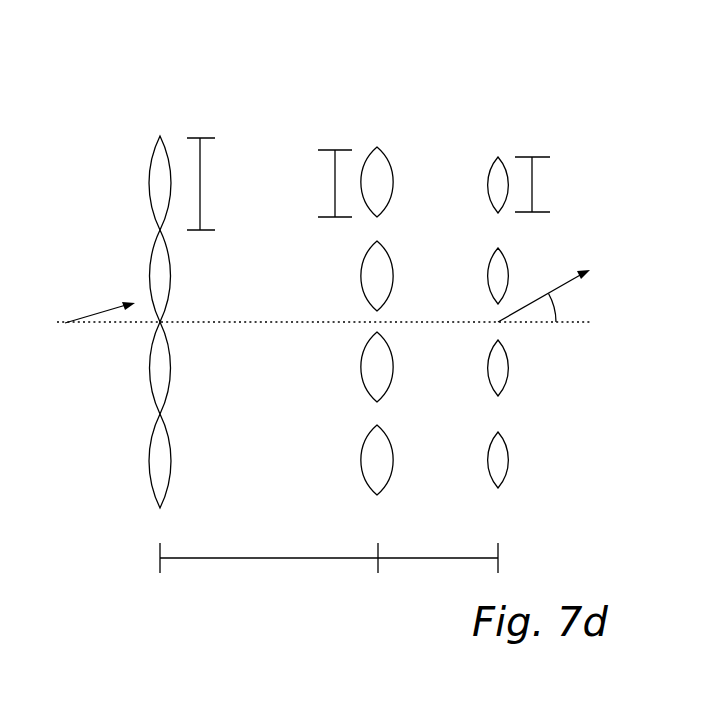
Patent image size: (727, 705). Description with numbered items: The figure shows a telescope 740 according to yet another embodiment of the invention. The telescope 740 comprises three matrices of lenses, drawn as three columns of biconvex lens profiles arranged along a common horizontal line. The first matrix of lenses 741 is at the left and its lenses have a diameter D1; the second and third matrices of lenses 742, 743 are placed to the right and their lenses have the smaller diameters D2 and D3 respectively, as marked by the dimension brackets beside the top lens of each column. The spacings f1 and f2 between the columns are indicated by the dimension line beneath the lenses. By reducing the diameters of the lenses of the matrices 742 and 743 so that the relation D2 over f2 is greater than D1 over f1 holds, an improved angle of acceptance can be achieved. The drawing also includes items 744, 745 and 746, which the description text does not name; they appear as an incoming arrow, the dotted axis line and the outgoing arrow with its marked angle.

The telescope 740 is at (462, 68).
The matrix of lenses 741 is at (160, 136).
The matrix of lenses 742 is at (498, 140).
The matrix of lenses 743 is at (378, 138).
The incoming light beam 744 is at (113, 305).
The optical axis 745 is at (102, 324).
The outgoing light beam / deflection angle 746 is at (538, 313).